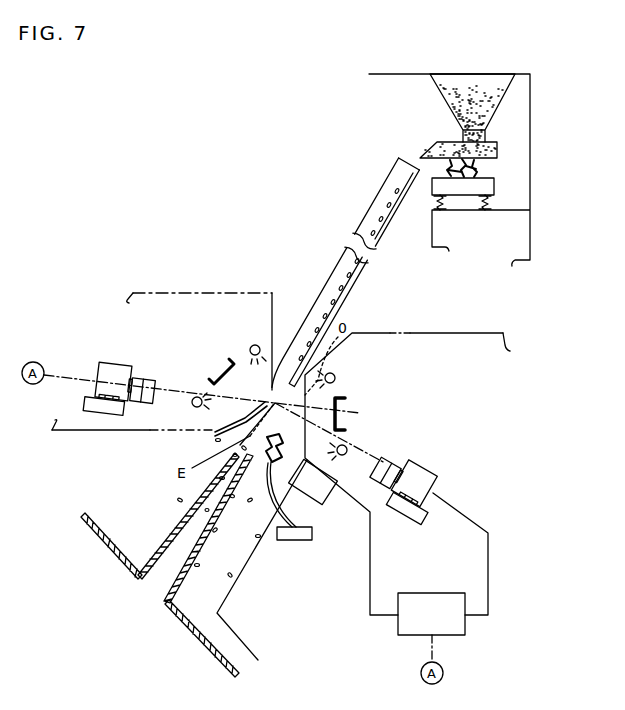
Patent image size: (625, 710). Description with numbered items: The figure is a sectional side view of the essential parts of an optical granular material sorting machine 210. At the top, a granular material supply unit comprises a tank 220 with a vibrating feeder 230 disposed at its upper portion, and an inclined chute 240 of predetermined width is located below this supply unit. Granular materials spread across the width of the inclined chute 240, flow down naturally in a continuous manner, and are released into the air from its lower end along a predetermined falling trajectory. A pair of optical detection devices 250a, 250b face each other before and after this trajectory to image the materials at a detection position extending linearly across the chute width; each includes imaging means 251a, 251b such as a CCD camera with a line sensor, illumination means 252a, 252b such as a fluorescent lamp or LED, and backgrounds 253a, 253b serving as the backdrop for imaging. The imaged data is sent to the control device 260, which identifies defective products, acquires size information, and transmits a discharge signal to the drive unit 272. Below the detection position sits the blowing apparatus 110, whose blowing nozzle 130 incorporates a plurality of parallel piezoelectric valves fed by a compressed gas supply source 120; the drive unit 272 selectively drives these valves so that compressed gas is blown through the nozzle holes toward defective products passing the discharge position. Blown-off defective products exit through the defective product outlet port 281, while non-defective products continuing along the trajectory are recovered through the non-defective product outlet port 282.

The optical granular material sorting machine 210 is at (263, 189).
The tank 220 is at (445, 85).
The vibrating feeder 230 is at (440, 148).
The inclined chute 240 is at (386, 178).
The optical detection device 250a is at (178, 291).
The optical detection device 250b is at (455, 342).
The imaging means 251a is at (108, 370).
The imaging means 251b is at (428, 485).
The illumination means 252a is at (255, 344).
The illumination means 252b is at (337, 378).
The background 253a is at (226, 367).
The background 253b is at (348, 413).
The blowing nozzle 130 is at (283, 440).
The drive unit 272 is at (322, 496).
The compressed gas supply source 120 is at (300, 533).
The blowing apparatus 110 is at (283, 493).
The defective product outlet port 281 is at (198, 613).
The non-defective product outlet port 282 is at (155, 578).
The control device 260 is at (450, 628).